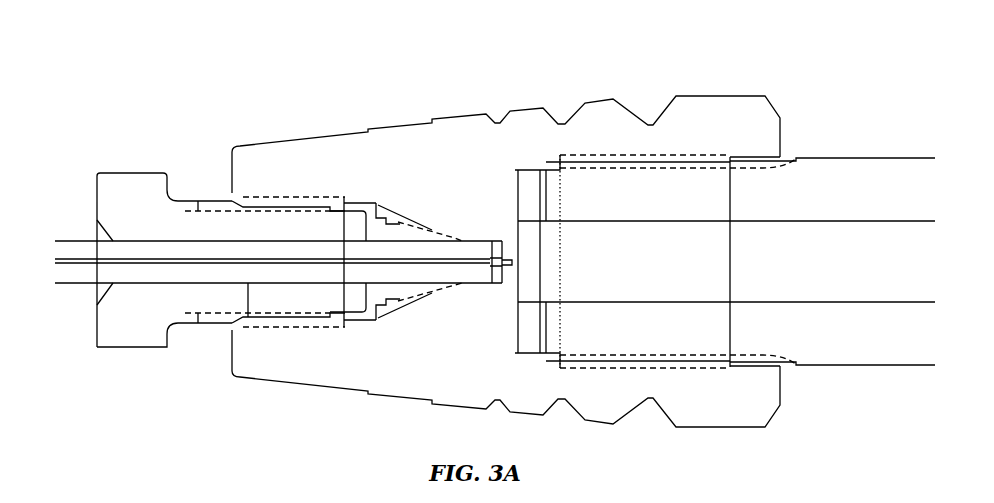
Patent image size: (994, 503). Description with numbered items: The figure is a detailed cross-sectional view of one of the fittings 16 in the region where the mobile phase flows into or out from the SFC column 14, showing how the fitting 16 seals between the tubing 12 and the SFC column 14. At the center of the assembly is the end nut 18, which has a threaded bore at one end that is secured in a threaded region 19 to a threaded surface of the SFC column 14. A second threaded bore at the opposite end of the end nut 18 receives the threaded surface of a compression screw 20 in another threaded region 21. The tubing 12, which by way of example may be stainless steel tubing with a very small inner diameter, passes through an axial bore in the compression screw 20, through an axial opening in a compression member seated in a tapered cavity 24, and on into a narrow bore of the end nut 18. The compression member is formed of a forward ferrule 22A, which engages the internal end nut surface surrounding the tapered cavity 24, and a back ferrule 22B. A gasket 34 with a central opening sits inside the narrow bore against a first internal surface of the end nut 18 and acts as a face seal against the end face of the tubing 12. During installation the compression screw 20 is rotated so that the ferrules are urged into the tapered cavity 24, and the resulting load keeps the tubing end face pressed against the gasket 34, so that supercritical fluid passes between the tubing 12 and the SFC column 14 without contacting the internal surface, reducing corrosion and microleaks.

The tubing 12 is at (78, 284).
The SFC column 14 is at (913, 158).
The fitting 16 is at (215, 72).
The end nut 18 is at (347, 392).
The threaded region 19 is at (656, 151).
The compression screw 20 is at (128, 348).
The threaded region 21 is at (303, 197).
The forward ferrule 22A is at (432, 228).
The back ferrule 22B is at (382, 216).
The tapered cavity 24 is at (392, 308).
The gasket 34 is at (497, 285).